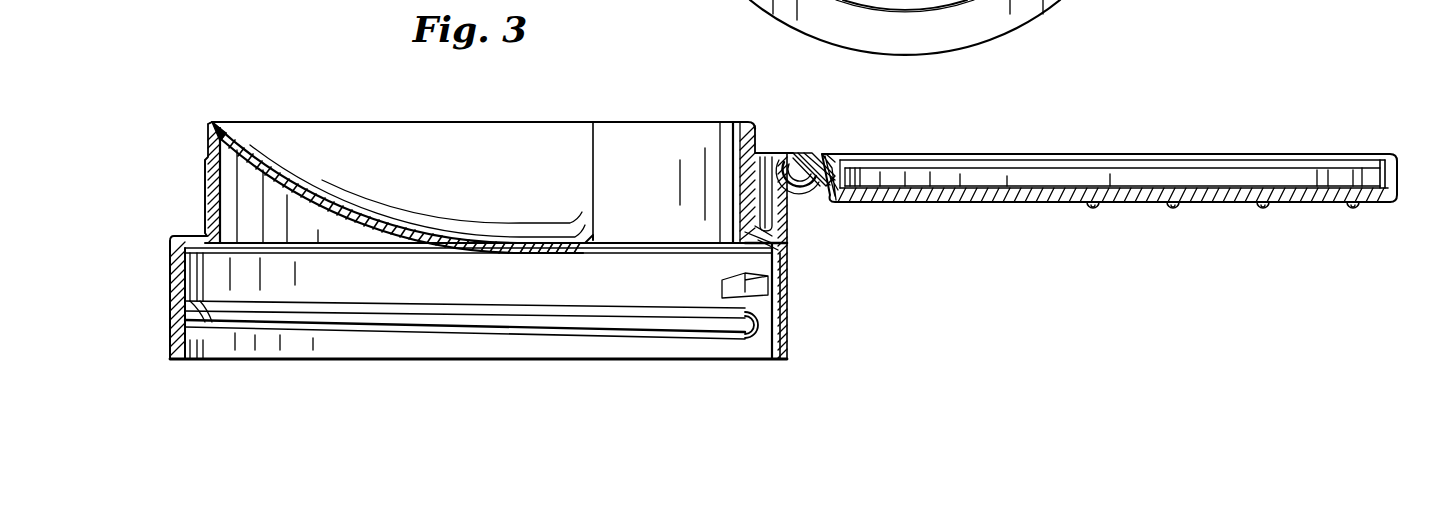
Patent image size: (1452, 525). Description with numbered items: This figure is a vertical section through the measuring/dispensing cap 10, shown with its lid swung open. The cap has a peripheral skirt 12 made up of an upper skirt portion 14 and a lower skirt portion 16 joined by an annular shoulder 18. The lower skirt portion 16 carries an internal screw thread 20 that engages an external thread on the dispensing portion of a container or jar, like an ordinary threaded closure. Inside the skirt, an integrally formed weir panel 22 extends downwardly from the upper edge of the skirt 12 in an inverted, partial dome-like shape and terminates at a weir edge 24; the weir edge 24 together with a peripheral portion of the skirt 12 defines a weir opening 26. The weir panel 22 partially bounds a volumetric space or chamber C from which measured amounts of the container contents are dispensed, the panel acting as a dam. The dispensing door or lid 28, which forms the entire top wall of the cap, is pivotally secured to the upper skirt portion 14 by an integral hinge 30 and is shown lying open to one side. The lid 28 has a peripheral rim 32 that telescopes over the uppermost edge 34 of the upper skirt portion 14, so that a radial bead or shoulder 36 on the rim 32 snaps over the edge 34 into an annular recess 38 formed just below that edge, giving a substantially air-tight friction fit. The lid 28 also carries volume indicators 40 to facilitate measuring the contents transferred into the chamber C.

The measuring/dispensing cap 10 is at (313, 92).
The peripheral skirt 12 is at (204, 198).
The upper skirt portion 14 is at (207, 160).
The lower skirt portion 16 is at (166, 298).
The annular shoulder 18 is at (190, 232).
The internal screw thread 20 is at (300, 306).
The weir panel 22 is at (300, 190).
The weir edge 24 is at (595, 236).
The weir opening 26 is at (672, 236).
The dispensing door or lid 28 is at (1074, 202).
The integral hinge 30 is at (800, 151).
The peripheral rim 32 is at (1400, 177).
The uppermost edge 34 is at (212, 125).
The radial bead or shoulder 36 is at (1378, 168).
The annular recess 38 is at (209, 150).
The volume indicators 40 is at (1171, 211).
The chamber C is at (404, 153).